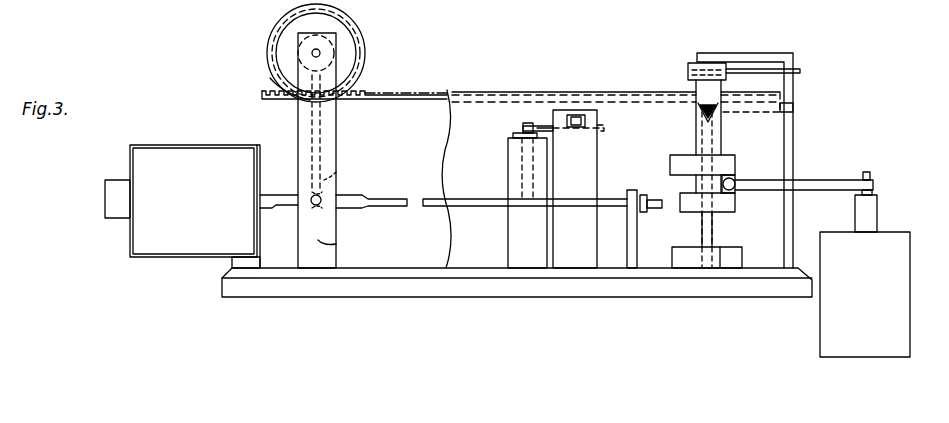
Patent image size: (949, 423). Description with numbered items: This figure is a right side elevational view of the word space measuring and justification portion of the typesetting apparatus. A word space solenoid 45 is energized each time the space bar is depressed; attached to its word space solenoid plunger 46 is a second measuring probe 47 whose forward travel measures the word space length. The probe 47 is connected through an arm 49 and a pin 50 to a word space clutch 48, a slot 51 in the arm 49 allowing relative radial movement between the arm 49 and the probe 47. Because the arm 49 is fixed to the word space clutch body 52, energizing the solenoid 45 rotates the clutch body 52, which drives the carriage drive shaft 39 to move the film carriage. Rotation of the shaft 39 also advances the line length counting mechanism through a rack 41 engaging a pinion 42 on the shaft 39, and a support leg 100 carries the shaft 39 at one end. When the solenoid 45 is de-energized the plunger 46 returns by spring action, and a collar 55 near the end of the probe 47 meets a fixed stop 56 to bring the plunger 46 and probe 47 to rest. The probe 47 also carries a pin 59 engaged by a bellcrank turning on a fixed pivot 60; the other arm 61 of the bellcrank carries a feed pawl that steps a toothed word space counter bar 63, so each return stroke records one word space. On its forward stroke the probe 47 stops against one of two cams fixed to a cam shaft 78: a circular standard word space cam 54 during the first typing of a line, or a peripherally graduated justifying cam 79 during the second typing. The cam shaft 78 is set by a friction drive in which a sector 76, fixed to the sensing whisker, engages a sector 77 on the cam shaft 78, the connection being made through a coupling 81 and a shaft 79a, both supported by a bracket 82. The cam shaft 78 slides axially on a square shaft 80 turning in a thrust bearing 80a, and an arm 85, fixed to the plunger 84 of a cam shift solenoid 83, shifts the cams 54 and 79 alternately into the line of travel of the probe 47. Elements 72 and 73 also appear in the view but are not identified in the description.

The carriage drive shaft 39 is at (320, 54).
The rack 41 is at (270, 98).
The pinion 42 is at (270, 78).
The word space solenoid 45 is at (210, 196).
The word space solenoid plunger 46 is at (266, 195).
The second measuring probe 47 is at (370, 198).
The word space clutch 48 is at (374, 31).
The arm 49 is at (322, 128).
The pin 50 is at (322, 206).
The slot 51 is at (337, 172).
The word space clutch body 52 is at (356, 38).
The standard word space cam 54 is at (727, 214).
The collar 55 is at (645, 196).
The fixed stop 56 is at (631, 190).
The pin 59 is at (508, 160).
The fixed pivot 60 is at (526, 126).
The other arm of bellcrank 61 is at (548, 130).
The word space counter bar 63 is at (581, 109).
The housing 72 is at (745, 103).
The bar 73 is at (490, 94).
The sector 76 is at (800, 71).
The sector 77 is at (688, 72).
The cam shaft 78 is at (695, 118).
The justifying cam 79 is at (726, 163).
The shaft 79a is at (700, 148).
The square shaft 80 is at (703, 232).
The thrust bearing 80a is at (730, 260).
The coupling 81 is at (720, 118).
The bracket 82 is at (770, 55).
The cam shift solenoid 83 is at (876, 276).
The plunger 84 is at (872, 210).
The arm 85 is at (832, 180).
The support leg 100 is at (336, 244).